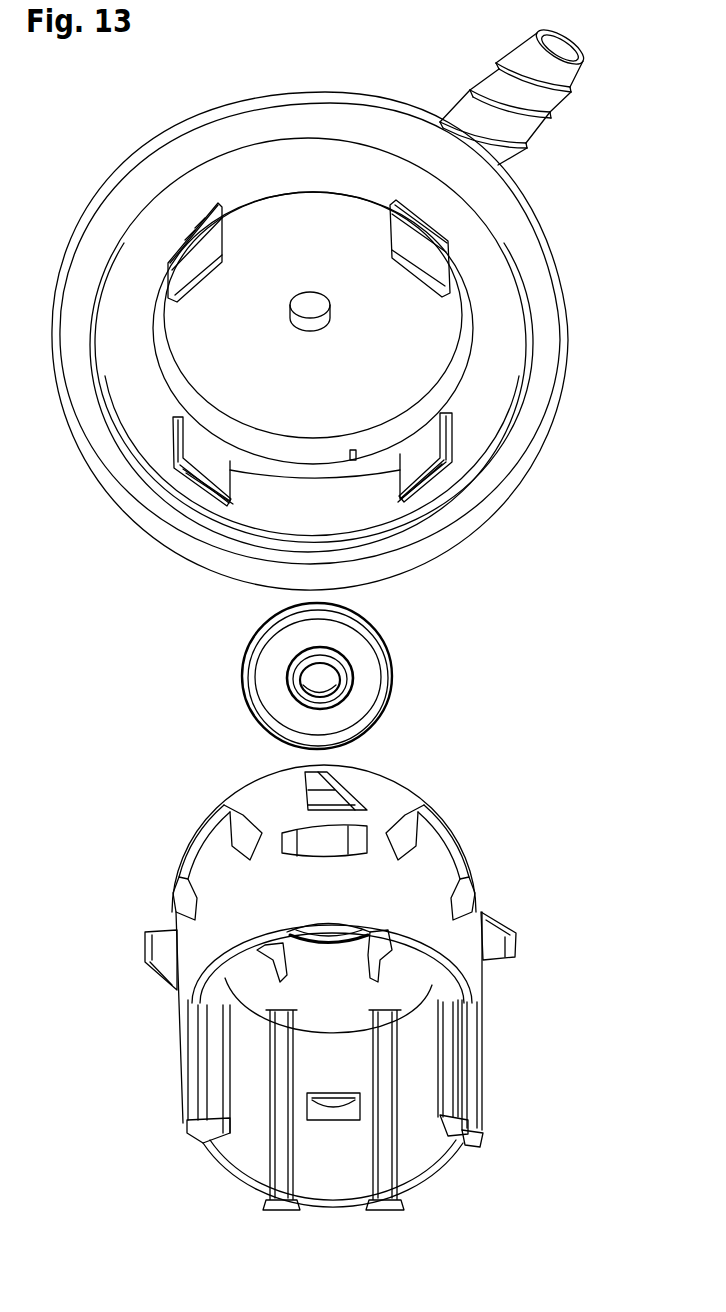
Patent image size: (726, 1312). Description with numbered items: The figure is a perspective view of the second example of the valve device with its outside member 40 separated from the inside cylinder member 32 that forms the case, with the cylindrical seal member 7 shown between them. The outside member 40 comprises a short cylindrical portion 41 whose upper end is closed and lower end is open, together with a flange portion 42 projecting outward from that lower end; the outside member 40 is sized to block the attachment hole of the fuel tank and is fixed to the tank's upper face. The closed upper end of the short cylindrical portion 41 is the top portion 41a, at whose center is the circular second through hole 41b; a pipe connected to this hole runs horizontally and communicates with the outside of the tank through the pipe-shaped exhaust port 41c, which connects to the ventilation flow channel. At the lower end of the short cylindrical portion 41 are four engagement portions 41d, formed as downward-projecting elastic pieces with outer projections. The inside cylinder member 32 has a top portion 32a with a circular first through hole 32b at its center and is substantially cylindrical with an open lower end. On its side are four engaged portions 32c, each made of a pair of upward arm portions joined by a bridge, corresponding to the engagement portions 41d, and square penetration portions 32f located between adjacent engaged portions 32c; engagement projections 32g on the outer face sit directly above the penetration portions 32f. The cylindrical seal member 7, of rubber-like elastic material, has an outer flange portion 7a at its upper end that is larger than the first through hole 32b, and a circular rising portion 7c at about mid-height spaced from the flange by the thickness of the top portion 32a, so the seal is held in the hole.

The outside member 40 is at (277, 92).
The short cylindrical portion 41 is at (451, 350).
The top portion 41a is at (347, 213).
The second through hole 41b is at (307, 307).
The exhaust port 41c is at (548, 90).
The engagement portions 41d is at (182, 258).
The flange portion 42 is at (538, 424).
The cylindrical seal member 7 is at (353, 680).
The outer flange portion 7a is at (387, 697).
The circular rising portion 7c is at (350, 663).
The inside cylinder member 32 is at (472, 1025).
The top portion 32a is at (400, 980).
The first through hole 32b is at (337, 927).
The engaged portions 32c is at (203, 833).
The penetration portions 32f is at (333, 833).
The projecting tabs 32g is at (313, 780).